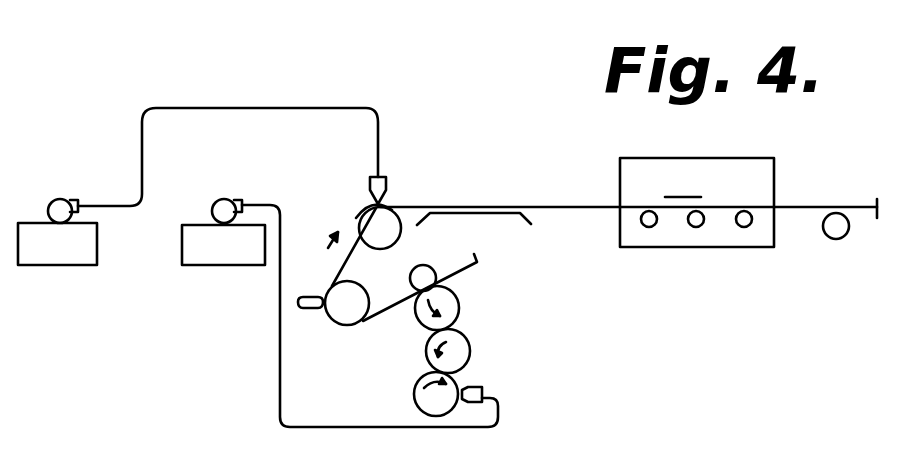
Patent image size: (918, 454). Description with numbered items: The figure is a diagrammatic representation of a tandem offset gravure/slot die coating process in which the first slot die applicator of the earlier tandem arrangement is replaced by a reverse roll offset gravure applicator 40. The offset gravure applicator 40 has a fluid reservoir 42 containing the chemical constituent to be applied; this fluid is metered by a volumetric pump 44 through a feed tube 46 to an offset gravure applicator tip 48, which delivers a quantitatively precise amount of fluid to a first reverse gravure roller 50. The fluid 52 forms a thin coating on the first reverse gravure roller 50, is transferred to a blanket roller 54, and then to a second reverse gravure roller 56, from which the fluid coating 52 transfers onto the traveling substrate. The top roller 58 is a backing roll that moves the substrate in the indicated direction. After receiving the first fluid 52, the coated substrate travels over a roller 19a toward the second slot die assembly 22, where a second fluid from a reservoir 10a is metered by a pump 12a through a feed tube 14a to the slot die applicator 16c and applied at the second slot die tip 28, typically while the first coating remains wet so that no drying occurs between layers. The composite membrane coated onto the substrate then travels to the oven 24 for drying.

The reservoir 10a is at (97, 265).
The pump 12a is at (56, 198).
The feed tube 14a is at (182, 108).
The second slot die assembly 22 is at (298, 102).
The slot die applicator 16c is at (368, 186).
The roller 19a is at (393, 208).
The second slot die tip 28 is at (362, 222).
The oven 24 is at (697, 202).
The fluid reservoir 42 is at (207, 268).
The volumetric pump 44 is at (218, 198).
The feed tube 46 is at (280, 360).
The top roller 58 is at (441, 272).
The second reverse gravure roller 56 is at (460, 300).
The reverse roll offset gravure applicator 40 is at (501, 338).
The blanket roller 54 is at (436, 359).
The fluid 52 is at (414, 386).
The first reverse gravure roller 50 is at (431, 398).
The offset gravure applicator tip 48 is at (483, 383).